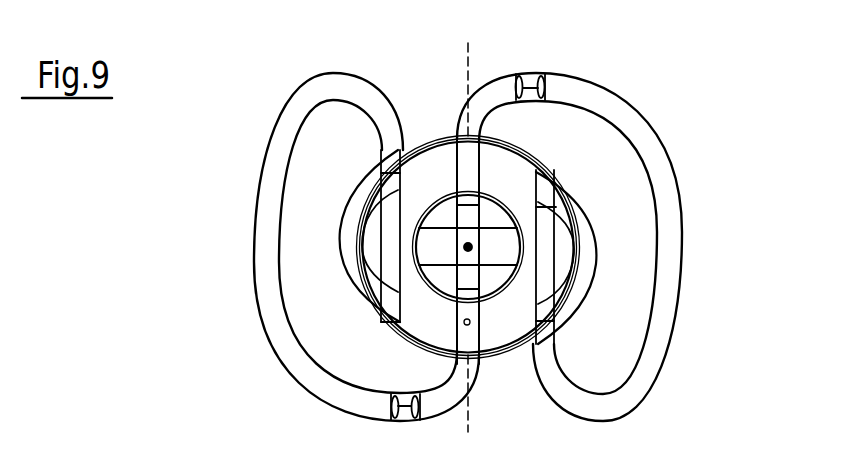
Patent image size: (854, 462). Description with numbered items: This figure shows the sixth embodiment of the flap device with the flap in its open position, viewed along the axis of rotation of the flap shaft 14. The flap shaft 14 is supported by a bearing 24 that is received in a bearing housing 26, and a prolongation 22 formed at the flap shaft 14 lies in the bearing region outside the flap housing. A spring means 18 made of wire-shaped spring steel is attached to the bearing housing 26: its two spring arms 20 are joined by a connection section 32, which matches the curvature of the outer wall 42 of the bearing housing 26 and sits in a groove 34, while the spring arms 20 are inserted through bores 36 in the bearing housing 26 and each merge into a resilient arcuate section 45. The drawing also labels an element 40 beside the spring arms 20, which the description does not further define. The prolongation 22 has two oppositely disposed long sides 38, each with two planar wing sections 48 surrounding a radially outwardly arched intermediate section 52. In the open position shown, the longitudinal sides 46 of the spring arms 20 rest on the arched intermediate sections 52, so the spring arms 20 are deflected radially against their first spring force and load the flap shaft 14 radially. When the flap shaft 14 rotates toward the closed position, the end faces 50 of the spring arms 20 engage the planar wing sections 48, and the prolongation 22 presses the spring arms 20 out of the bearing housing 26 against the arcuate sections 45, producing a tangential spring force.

The flap shaft 14 is at (440, 220).
The spring means 18 is at (498, 93).
The spring arm 20 is at (537, 175).
The prolongation 22 is at (519, 233).
The bearing 24 is at (452, 182).
The bearing housing 26 is at (415, 175).
The connection section 32 is at (519, 233).
The groove 34 is at (519, 233).
The bore 36 is at (463, 236).
The long side 38 is at (400, 188).
The clip arm 40 is at (463, 244).
The outer wall 42 is at (519, 214).
The arcuate section 45 is at (464, 244).
The longitudinal side 46 is at (420, 256).
The planar wing section 48 is at (466, 234).
The end face 50 is at (453, 210).
The arched intermediate section 52 is at (519, 214).